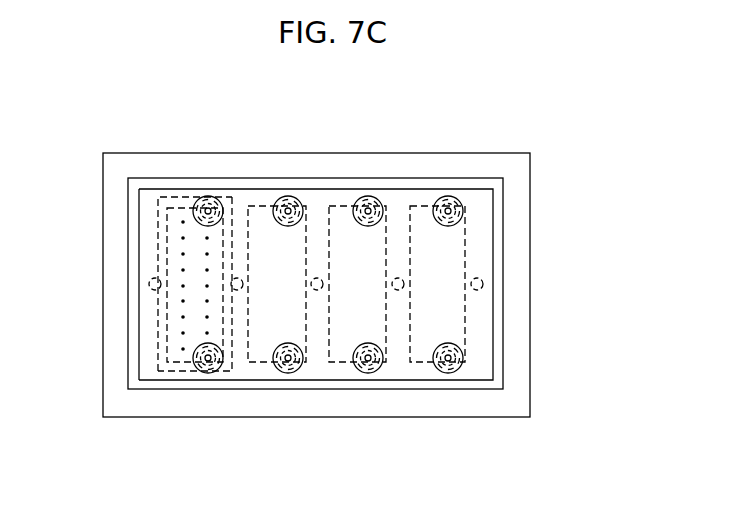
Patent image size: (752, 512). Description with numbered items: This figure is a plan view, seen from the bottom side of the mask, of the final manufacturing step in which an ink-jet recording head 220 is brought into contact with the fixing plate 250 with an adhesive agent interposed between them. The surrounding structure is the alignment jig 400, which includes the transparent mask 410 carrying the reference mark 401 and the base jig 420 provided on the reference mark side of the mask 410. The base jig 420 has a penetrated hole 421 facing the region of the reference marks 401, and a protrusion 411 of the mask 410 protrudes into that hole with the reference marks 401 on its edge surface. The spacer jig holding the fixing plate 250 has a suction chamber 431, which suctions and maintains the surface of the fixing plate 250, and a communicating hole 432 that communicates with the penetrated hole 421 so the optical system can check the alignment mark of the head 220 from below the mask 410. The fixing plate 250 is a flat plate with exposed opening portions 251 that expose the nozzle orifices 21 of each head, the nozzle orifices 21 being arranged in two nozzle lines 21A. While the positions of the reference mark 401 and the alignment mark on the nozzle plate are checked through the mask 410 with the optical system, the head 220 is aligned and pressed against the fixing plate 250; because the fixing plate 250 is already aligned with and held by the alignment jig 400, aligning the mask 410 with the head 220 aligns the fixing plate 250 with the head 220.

The alignment jig 400 is at (529, 130).
The base jig 420 is at (365, 177).
The mask 410 is at (402, 200).
The protrusion 411 is at (160, 199).
The communicating hole 432 is at (160, 197).
The ink-jet recording head 220 is at (227, 194).
The nozzle orifice 21 is at (178, 222).
The nozzle line 21A is at (186, 356).
The reference mark 401 is at (198, 197).
The penetrated hole 421 is at (215, 196).
The exposed opening portion 251 is at (250, 256).
The fixing plate 250 is at (463, 238).
The suction chamber 431 is at (150, 288).